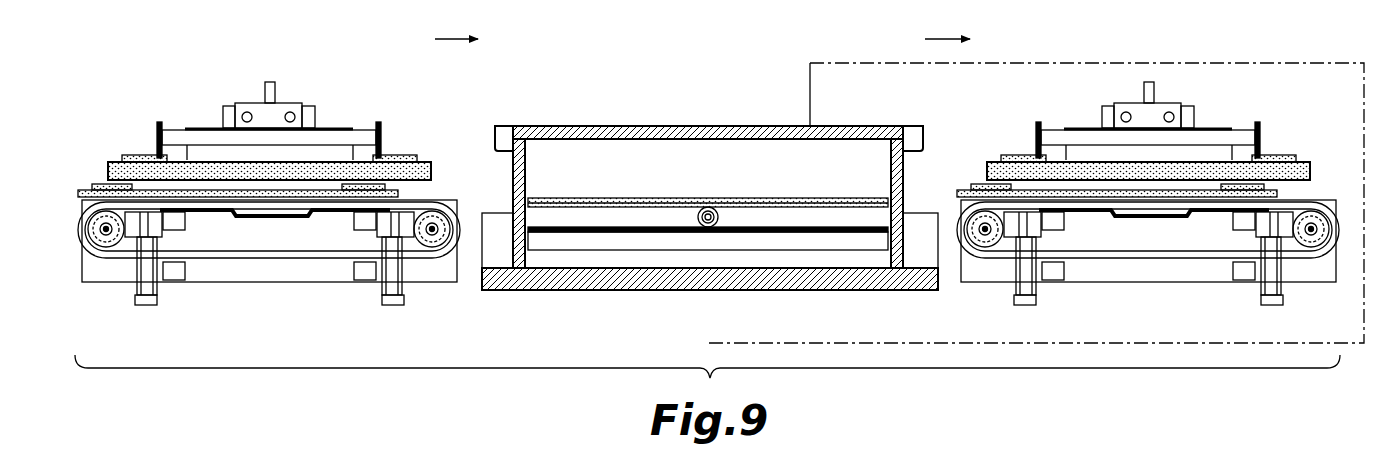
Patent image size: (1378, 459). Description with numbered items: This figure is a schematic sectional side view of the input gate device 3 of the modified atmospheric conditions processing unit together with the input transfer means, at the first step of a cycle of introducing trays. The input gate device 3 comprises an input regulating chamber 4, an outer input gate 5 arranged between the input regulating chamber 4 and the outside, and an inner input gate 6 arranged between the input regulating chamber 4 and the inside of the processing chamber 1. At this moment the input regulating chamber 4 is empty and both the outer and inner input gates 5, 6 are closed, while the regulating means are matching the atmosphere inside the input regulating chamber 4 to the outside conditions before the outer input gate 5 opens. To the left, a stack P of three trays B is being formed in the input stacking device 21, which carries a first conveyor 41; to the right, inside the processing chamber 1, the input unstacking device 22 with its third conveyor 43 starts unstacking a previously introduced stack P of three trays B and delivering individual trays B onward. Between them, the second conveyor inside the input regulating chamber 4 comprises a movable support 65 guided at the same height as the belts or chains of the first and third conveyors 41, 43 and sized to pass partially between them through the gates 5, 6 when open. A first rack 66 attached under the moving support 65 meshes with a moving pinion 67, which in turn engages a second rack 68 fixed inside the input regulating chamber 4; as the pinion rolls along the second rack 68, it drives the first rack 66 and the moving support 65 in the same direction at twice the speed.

The processing chamber 1 is at (855, 78).
The input gate device 3 is at (702, 188).
The input regulating chamber 4 is at (715, 148).
The outer input gate 5 is at (515, 186).
The inner input gate 6 is at (903, 188).
The input stacking device 21 is at (237, 90).
The input unstacking device 22 is at (1219, 116).
The first conveyor 41 is at (272, 252).
The third conveyor 43 is at (1151, 252).
The movable support 65 is at (598, 198).
The first rack 66 is at (792, 203).
The moving pinion 67 is at (698, 220).
The second rack 68 is at (777, 235).
The trays B is at (103, 180).
The stacks of trays P is at (394, 165).